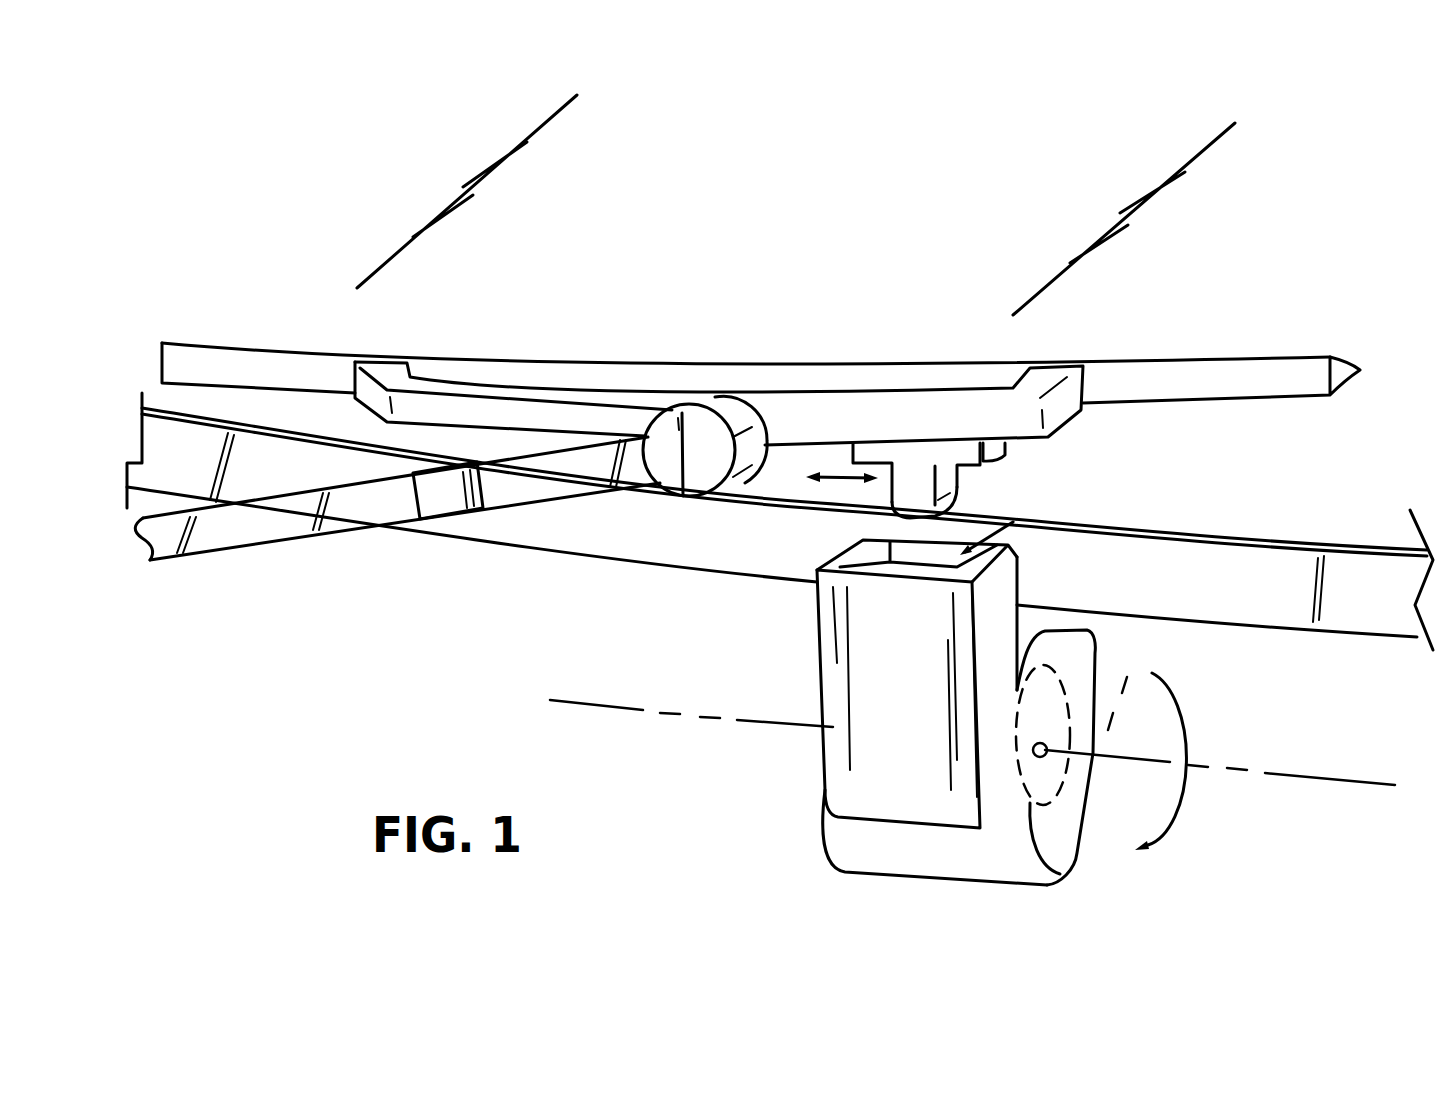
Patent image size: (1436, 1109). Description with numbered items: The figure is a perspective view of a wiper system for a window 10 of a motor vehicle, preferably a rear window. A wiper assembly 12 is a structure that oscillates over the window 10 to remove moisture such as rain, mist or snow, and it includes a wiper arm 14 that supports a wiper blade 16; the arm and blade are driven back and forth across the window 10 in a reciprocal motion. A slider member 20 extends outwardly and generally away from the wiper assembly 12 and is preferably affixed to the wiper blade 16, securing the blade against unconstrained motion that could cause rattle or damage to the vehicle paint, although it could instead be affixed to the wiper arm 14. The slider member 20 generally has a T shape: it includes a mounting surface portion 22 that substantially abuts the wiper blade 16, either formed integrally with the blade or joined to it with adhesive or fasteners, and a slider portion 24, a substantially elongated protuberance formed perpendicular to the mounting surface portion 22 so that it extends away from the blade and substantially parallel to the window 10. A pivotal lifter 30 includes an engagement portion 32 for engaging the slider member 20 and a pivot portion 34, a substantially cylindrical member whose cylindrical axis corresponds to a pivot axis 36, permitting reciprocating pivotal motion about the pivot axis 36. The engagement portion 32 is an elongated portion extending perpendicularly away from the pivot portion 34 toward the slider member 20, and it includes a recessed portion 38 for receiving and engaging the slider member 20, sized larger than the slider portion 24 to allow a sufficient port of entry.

The window 10 is at (897, 130).
The wiper assembly 12 is at (630, 300).
The wiper arm 14 is at (440, 498).
The wiper blade 16 is at (1060, 362).
The slider member 20 is at (823, 475).
The mounting surface portion 22 is at (984, 466).
The slider portion 24 is at (940, 514).
The pivotal lifter 30 is at (972, 729).
The engagement portion 32 is at (823, 720).
The pivot portion 34 is at (1063, 700).
The pivot axis 36 is at (1268, 773).
The recessed portion 38 is at (1000, 525).